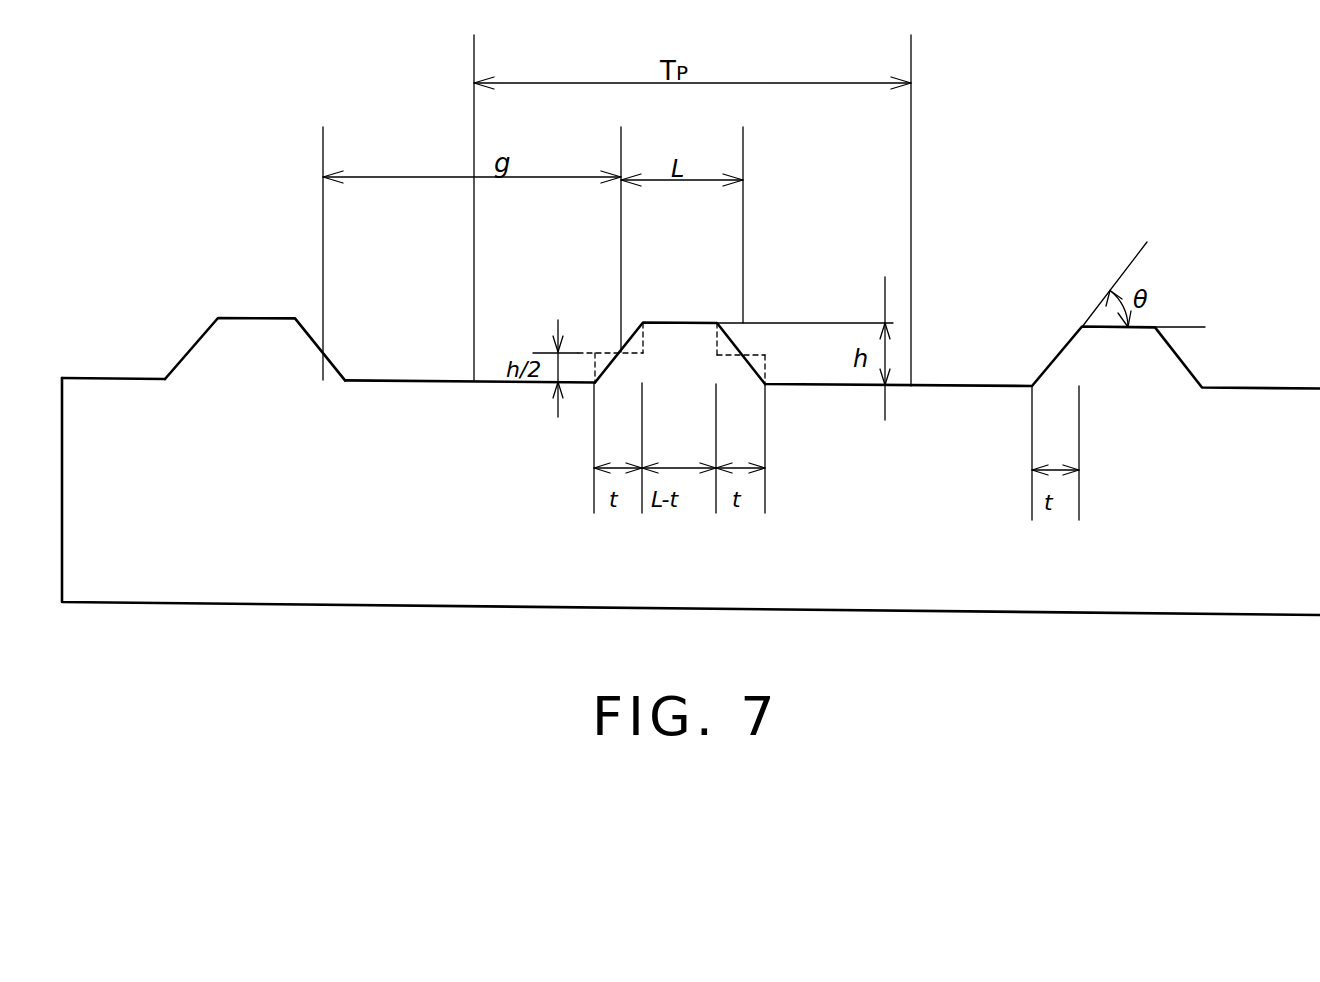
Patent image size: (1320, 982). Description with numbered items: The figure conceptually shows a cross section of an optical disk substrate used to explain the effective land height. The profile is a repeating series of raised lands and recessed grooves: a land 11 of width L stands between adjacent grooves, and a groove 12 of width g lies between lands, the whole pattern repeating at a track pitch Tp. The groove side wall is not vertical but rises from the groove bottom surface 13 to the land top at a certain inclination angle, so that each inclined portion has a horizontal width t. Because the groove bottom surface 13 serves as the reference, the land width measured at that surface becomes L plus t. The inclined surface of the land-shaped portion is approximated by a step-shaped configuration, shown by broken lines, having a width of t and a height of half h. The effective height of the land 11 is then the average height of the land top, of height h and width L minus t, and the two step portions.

The land 11 is at (231, 307).
The groove 12 is at (470, 329).
The groove bottom surface 13 is at (960, 387).